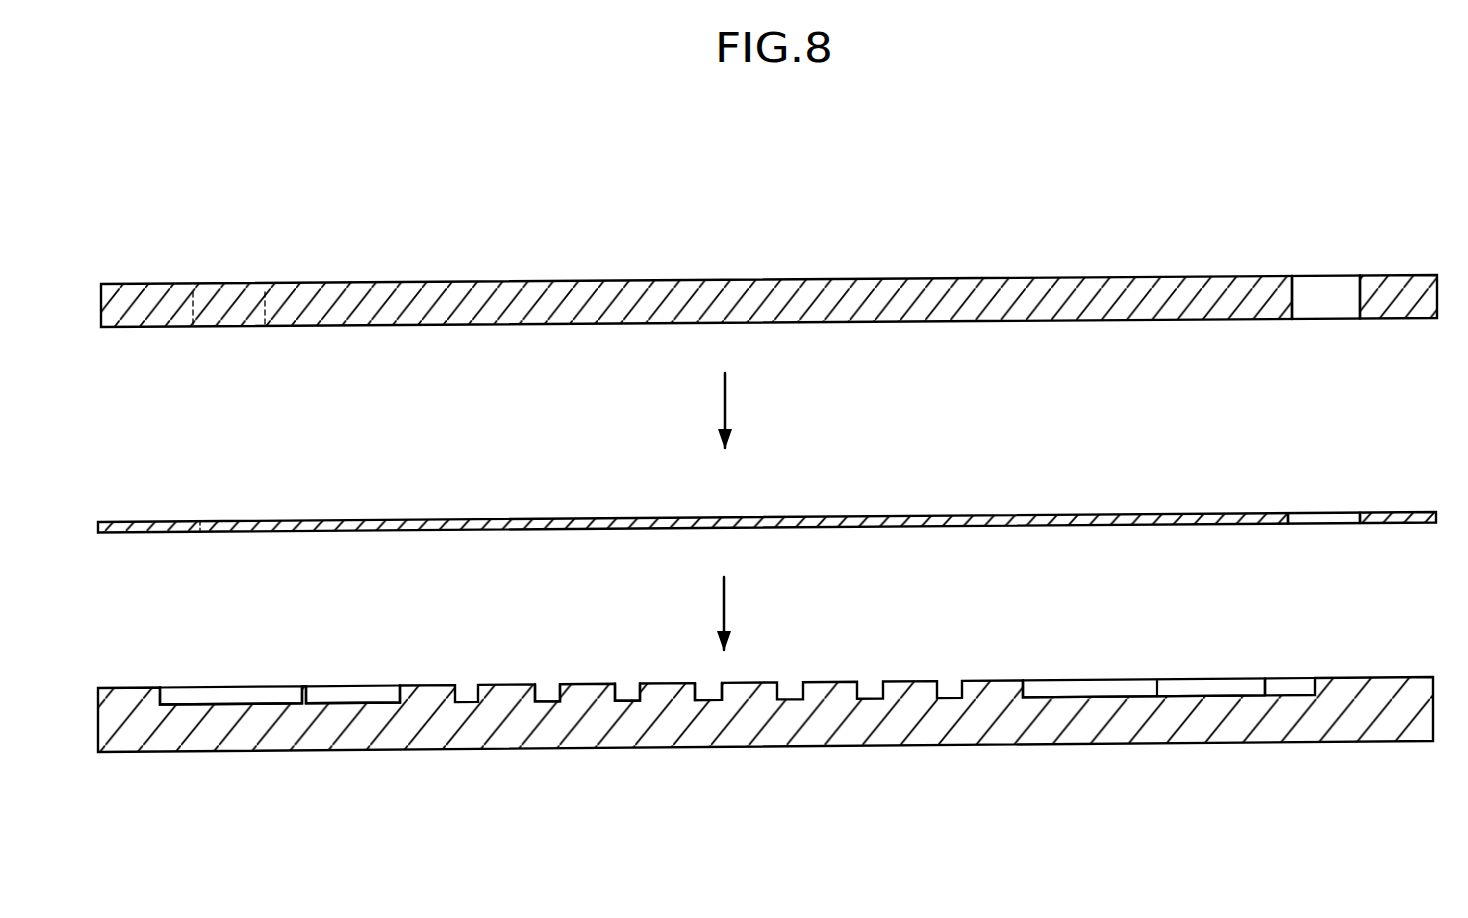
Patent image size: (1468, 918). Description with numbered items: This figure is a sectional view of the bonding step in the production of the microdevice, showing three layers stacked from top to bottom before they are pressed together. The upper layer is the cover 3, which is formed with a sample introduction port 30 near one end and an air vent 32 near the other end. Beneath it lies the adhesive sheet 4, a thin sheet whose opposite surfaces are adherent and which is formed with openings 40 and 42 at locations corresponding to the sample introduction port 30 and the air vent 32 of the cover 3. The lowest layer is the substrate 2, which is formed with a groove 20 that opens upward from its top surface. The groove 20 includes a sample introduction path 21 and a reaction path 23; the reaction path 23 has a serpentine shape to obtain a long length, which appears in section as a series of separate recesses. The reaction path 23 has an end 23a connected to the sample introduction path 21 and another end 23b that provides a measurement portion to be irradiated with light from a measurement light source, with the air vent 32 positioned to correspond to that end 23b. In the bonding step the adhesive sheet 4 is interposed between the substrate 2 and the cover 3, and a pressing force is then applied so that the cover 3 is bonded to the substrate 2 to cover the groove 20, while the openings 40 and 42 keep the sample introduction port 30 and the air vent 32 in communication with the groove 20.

The substrate 2 is at (650, 750).
The cover 3 is at (913, 276).
The adhesive sheet 4 is at (996, 512).
The groove 20 is at (740, 697).
The sample introduction path 21 is at (242, 706).
The reaction path 23 is at (630, 700).
The end of the reaction path 23a is at (323, 698).
The another end of the reaction path 23b is at (1210, 688).
The sample introduction port 30 is at (262, 306).
The air vent 32 is at (1292, 298).
The opening 40 is at (208, 518).
The opening 42 is at (1290, 517).